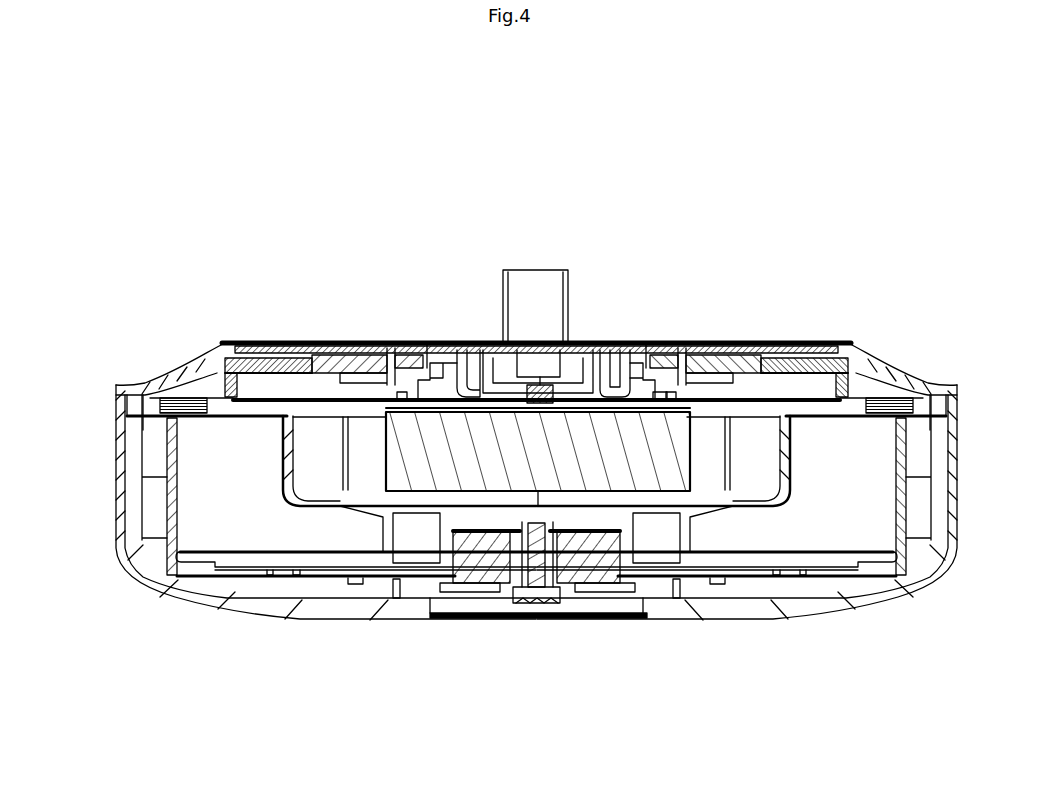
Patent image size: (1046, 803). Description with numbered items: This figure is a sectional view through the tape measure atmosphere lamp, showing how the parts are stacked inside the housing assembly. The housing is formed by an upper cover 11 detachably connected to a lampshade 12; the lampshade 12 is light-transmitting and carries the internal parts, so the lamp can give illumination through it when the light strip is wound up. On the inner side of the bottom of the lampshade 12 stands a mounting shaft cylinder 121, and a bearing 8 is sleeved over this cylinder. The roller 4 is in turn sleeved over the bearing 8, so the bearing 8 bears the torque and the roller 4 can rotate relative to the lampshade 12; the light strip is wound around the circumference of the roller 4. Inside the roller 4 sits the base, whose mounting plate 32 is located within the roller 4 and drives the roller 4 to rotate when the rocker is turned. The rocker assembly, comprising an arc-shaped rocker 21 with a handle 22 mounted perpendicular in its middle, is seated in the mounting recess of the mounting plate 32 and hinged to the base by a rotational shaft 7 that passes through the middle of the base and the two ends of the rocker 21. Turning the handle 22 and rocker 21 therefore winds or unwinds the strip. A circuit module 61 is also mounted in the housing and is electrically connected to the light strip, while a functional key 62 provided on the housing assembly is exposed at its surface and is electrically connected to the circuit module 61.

The roller 4 is at (787, 340).
The rotational shaft 7 is at (313, 340).
The bearing 8 is at (572, 610).
The upper cover 11 is at (200, 372).
The lampshade 12 is at (313, 617).
The rocker 21 is at (357, 340).
The handle 22 is at (540, 280).
The mounting plate 32 is at (280, 345).
The circuit module 61 is at (645, 352).
The functional key 62 is at (490, 347).
The mounting shaft cylinder 121 is at (470, 617).